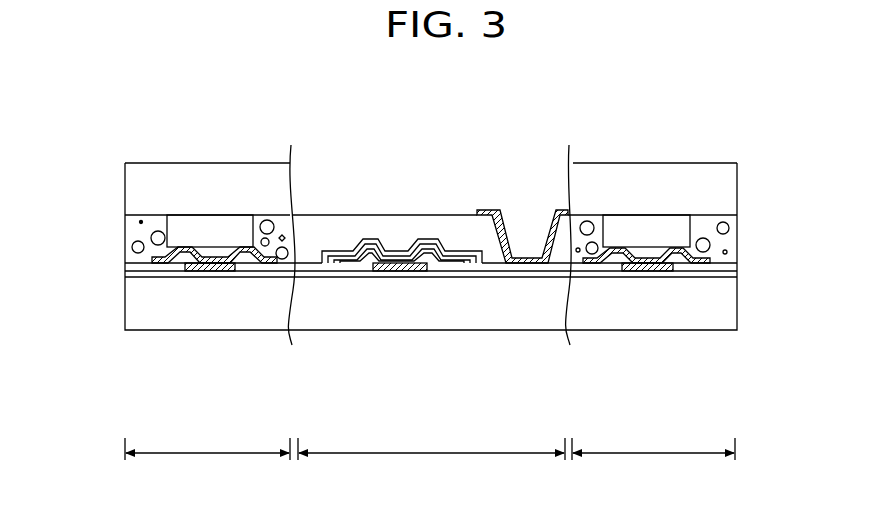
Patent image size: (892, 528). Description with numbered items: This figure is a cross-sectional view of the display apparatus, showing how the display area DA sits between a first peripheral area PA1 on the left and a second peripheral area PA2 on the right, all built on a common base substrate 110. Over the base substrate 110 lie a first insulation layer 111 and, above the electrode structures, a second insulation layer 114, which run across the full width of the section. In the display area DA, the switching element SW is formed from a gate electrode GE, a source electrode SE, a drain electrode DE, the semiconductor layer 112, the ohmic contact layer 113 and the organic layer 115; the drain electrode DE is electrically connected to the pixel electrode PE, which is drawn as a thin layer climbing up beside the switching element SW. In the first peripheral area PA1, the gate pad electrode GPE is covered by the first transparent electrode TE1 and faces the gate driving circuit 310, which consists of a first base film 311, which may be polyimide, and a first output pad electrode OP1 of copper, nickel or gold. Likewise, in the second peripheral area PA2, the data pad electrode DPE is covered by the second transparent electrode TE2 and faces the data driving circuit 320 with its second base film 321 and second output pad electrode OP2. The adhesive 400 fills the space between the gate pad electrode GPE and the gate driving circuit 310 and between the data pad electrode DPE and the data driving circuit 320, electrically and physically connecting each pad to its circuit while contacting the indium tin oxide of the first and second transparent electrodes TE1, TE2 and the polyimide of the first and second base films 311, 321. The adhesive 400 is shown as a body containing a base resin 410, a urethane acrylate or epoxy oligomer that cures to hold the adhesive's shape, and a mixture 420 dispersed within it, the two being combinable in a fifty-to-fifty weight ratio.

The base substrate 110 is at (125, 318).
The first insulation layer 111 is at (125, 277).
The semiconductor layer 112 is at (427, 265).
The ohmic contact layer 113 is at (362, 262).
The second insulation layer 114 is at (125, 264).
The organic layer 115 is at (378, 214).
The gate driving circuit 310 is at (66, 172).
The first base film 311 is at (125, 184).
The data driving circuit 320 is at (796, 172).
The second base film 321 is at (735, 184).
The adhesive 400 is at (258, 103).
The base resin 410 is at (266, 222).
The mixture 420 is at (142, 221).
The first output pad electrode OP1 is at (168, 229).
The second output pad electrode OP2 is at (690, 230).
The gate pad electrode GPE is at (193, 271).
The first transparent electrode TE1 is at (215, 263).
The source electrode SE is at (343, 264).
The gate electrode GE is at (397, 271).
The drain electrode DE is at (465, 262).
The switching element SW is at (490, 393).
The pixel electrode PE is at (523, 263).
The data pad electrode DPE is at (652, 271).
The second transparent electrode TE2 is at (698, 258).
The first peripheral area PA1 is at (207, 458).
The display area DA is at (431, 458).
The second peripheral area PA2 is at (653, 458).